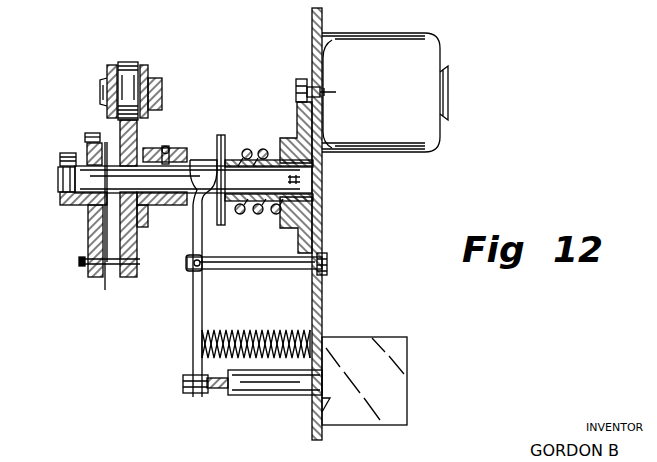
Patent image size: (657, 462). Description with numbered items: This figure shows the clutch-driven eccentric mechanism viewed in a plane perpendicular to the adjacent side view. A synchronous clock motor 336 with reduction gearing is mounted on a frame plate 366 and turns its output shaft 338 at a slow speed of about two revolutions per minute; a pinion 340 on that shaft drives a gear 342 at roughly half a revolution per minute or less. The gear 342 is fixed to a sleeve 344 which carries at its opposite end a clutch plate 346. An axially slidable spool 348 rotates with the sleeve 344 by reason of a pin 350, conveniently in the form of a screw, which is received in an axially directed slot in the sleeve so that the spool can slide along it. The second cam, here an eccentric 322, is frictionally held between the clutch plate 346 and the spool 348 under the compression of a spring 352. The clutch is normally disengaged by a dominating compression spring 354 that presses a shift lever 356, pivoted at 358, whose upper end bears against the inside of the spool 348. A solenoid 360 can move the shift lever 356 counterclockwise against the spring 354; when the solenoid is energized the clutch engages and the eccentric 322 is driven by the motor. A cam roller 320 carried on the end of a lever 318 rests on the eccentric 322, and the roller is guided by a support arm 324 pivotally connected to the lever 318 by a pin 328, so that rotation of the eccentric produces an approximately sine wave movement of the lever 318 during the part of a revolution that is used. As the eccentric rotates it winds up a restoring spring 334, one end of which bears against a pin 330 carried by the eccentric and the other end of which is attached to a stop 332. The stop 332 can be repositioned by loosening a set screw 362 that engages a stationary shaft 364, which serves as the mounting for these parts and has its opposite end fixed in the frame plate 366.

The lever 318 is at (108, 66).
The cam roller 320 is at (128, 62).
The second cam (eccentric) 322 is at (130, 278).
The support arm 324 is at (147, 68).
The pin 328 is at (101, 88).
The pin 330 is at (79, 261).
The stop 332 is at (86, 138).
The restoring spring 334 is at (104, 290).
The synchronous clock motor 336 is at (437, 62).
The output shaft 338 is at (325, 90).
The pinion 340 is at (297, 92).
The gear 342 is at (304, 242).
The sleeve 344 is at (222, 214).
The clutch plate 346 is at (118, 133).
The axially slidable spool 348 is at (200, 159).
The pin 350 is at (166, 148).
The spring 352 is at (247, 149).
The dominating compression spring 354 is at (215, 330).
The shift lever 356 is at (194, 347).
The pivot 358 is at (200, 266).
The solenoid 360 is at (392, 340).
The set screw 362 is at (60, 158).
The stationary shaft 364 is at (60, 185).
The frame plate 366 is at (323, 212).